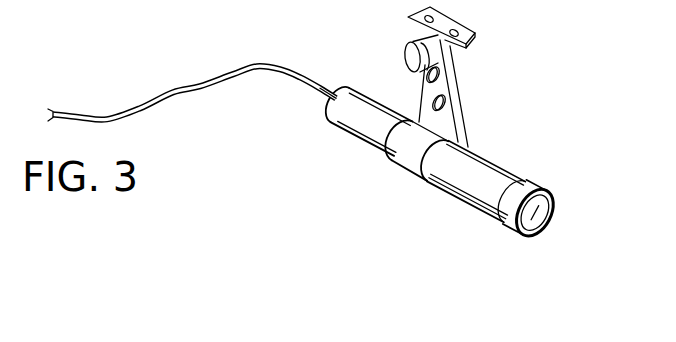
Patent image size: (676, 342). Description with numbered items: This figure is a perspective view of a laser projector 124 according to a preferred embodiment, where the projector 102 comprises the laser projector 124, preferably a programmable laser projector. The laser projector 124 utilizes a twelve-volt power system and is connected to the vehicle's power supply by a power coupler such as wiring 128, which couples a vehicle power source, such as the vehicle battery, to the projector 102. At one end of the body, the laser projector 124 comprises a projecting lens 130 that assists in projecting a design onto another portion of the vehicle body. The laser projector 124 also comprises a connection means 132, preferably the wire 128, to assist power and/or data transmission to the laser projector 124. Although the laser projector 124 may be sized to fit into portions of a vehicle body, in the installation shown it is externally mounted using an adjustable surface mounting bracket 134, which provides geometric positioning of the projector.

The projector 102 is at (327, 165).
The laser projector 124 is at (395, 226).
The wiring 128 is at (196, 88).
The projecting lens 130 is at (553, 197).
The connection means 132 is at (282, 110).
The adjustable surface mounting bracket 134 is at (461, 102).